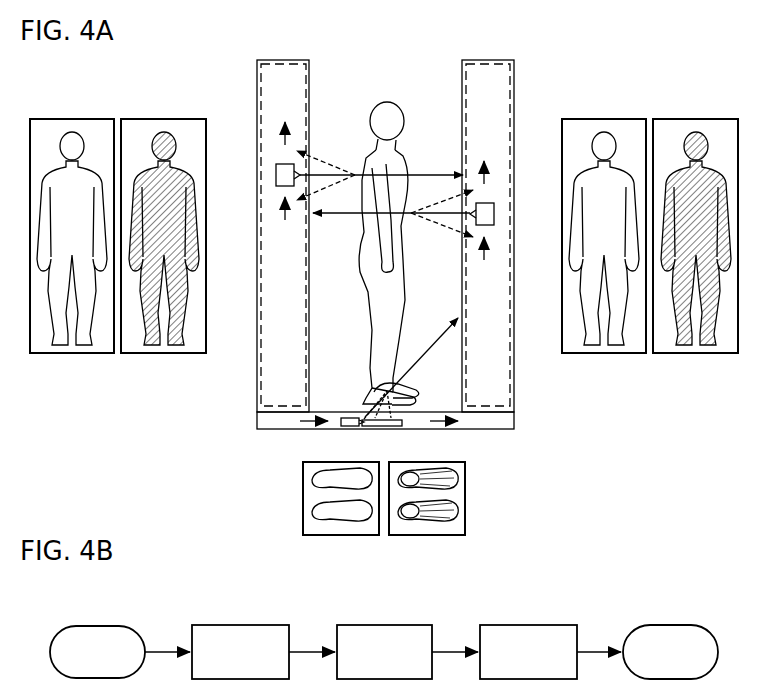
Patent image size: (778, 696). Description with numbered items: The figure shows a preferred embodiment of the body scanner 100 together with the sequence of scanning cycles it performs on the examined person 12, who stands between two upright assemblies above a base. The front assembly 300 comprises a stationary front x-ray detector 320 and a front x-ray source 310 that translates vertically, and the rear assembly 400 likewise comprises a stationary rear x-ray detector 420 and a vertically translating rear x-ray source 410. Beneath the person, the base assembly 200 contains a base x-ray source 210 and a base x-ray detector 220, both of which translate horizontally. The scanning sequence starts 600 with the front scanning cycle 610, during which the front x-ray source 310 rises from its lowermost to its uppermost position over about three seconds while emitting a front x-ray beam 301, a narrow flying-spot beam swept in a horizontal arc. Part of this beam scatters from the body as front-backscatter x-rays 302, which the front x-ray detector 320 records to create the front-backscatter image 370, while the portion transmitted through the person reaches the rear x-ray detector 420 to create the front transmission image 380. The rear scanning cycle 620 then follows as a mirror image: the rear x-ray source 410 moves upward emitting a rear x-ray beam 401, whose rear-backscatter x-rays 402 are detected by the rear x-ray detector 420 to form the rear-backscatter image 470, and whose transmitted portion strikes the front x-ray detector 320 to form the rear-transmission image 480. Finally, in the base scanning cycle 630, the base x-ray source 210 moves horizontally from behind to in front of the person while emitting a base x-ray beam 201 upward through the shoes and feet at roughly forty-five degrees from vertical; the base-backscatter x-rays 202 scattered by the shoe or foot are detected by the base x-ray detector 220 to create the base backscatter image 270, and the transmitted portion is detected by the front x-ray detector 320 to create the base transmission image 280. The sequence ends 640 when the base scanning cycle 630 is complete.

In FIG. 4A, the body scanner 100 is at (611, 58).
In FIG. 4A, the examined person 12 is at (395, 96).
In FIG. 4A, the base assembly 200 is at (371, 384).
In FIG. 4A, the base x-ray beam 201 is at (432, 337).
In FIG. 4A, the base-backscatter x-rays 202 is at (402, 415).
In FIG. 4A, the base x-ray source 210 is at (355, 430).
In FIG. 4A, the base x-ray detector 220 is at (378, 430).
In FIG. 4A, the base backscatter image 270 is at (323, 545).
In FIG. 4A, the base transmission image 280 is at (389, 545).
In FIG. 4A, the front assembly 300 is at (512, 232).
In FIG. 4A, the front x-ray beam 301 is at (349, 217).
In FIG. 4A, the front-backscatter x-rays 302 is at (442, 223).
In FIG. 4A, the front x-ray source 310 is at (494, 214).
In FIG. 4A, the front x-ray detector 320 is at (500, 118).
In FIG. 4A, the front-backscatter image 370 is at (582, 362).
In FIG. 4A, the front transmission image 380 is at (674, 362).
In FIG. 4A, the rear assembly 400 is at (261, 232).
In FIG. 4A, the rear x-ray beam 401 is at (428, 163).
In FIG. 4A, the rear-backscatter x-rays 402 is at (328, 163).
In FIG. 4A, the rear x-ray source 410 is at (277, 176).
In FIG. 4A, the rear x-ray detector 420 is at (270, 118).
In FIG. 4A, the rear-backscatter image 470 is at (50, 362).
In FIG. 4A, the rear-transmission image 480 is at (143, 362).
In FIG. 4B, the start 600 is at (89, 618).
In FIG. 4B, the front scanning cycle 610 is at (231, 618).
In FIG. 4B, the rear scanning cycle 620 is at (376, 618).
In FIG. 4B, the base scanning cycle 630 is at (518, 618).
In FIG. 4B, the end of scanning sequence 640 is at (664, 618).